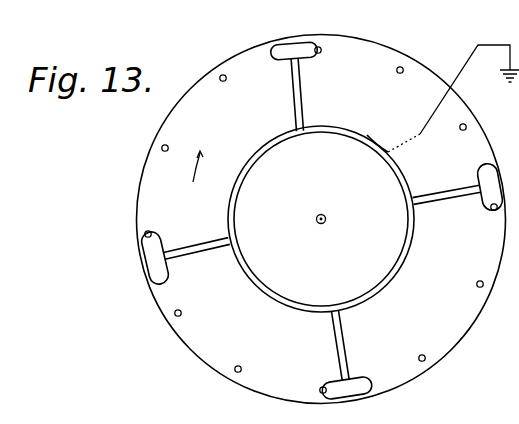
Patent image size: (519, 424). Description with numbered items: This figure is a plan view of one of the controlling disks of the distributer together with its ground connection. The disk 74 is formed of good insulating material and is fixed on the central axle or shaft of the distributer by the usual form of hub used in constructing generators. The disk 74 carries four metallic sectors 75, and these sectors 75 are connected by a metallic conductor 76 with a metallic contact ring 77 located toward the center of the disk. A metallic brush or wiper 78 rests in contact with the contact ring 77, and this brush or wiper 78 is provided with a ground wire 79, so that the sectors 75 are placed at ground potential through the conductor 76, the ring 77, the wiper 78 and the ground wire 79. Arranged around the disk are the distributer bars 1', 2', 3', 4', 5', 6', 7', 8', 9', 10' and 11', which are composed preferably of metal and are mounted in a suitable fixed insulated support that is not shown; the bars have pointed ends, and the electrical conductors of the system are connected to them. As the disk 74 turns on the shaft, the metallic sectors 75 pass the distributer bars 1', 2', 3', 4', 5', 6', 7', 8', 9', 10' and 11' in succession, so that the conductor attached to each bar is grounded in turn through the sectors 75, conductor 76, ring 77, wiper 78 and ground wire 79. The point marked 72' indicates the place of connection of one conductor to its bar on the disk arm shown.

The distributer bar 1' is at (179, 163).
The distributer bar 2' is at (229, 91).
The distributer bar 3' is at (329, 63).
The distributer bar 4' is at (396, 84).
The distributer bar 5' is at (456, 141).
The distributer bar 6' is at (482, 227).
The distributer bar 7' is at (478, 299).
The distributer bar 8' is at (412, 384).
The distributer bar 9' is at (311, 376).
The distributer bar 10' is at (259, 373).
The distributer bar 11' is at (198, 306).
The arm 72' is at (187, 239).
The disk 74 is at (421, 292).
The metallic sector 75 is at (153, 269).
The metallic conductor 76 is at (297, 95).
The metallic contact ring 77 is at (284, 301).
The brush or wiper 78 is at (384, 124).
The ground wire 79 is at (456, 77).